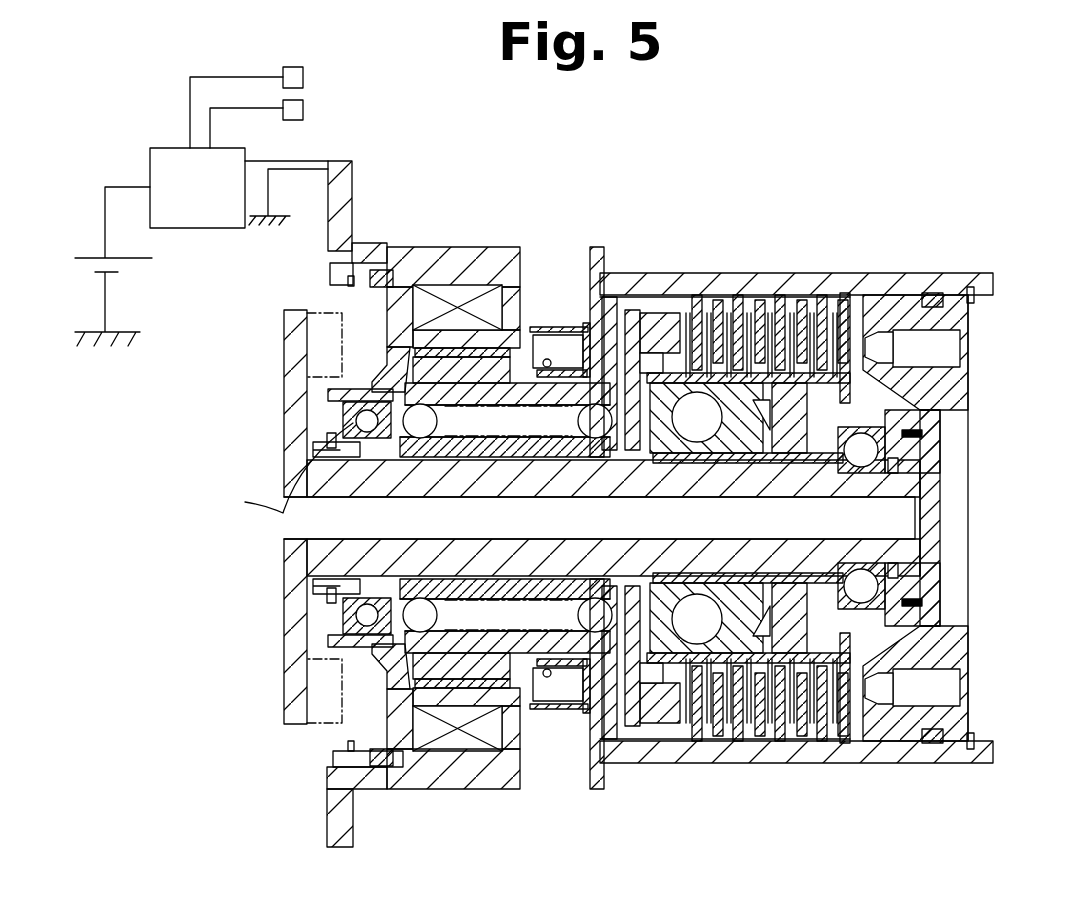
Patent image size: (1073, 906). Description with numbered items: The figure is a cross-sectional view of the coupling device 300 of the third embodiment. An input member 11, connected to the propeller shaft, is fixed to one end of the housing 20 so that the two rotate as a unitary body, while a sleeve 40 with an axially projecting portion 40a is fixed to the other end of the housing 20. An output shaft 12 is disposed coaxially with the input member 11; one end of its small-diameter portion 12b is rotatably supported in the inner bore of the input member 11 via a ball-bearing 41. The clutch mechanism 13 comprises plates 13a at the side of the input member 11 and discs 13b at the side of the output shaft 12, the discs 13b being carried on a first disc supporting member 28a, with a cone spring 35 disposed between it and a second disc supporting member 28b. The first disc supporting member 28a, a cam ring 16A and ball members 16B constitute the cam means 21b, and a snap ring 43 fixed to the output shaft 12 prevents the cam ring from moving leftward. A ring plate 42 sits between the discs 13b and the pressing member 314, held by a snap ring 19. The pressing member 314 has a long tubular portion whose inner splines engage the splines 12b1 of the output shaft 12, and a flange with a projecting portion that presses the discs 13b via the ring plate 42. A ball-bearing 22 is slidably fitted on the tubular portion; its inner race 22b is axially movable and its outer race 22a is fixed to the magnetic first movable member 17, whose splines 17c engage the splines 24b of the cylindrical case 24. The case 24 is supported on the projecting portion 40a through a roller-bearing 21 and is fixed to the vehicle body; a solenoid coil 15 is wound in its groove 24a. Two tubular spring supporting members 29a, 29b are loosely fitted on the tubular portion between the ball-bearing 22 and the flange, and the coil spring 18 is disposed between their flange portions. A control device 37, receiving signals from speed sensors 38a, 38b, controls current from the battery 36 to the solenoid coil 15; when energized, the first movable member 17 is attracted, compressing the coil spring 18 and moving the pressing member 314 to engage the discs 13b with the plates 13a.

The input member 11 is at (973, 381).
The output shaft 12 is at (297, 558).
The small-diameter portion 12b is at (737, 730).
The splines 12b1 is at (823, 733).
The clutch mechanism 13 is at (819, 268).
The plates 13a is at (700, 310).
The discs 13b is at (750, 317).
The solenoid coil 15 is at (462, 292).
The cam ring 16A is at (627, 343).
The ball members 16B is at (775, 445).
The first movable member 17 is at (395, 313).
The splines 17c is at (385, 273).
The coil spring 18 is at (515, 417).
The snap ring 19 is at (667, 343).
The housing 20 is at (873, 280).
The roller-bearing 21 is at (480, 368).
The cam means 21b is at (672, 395).
The ball-bearing 22 is at (338, 418).
The outer race 22a is at (340, 407).
The inner race 22b is at (353, 430).
The cylindrical case 24 is at (347, 202).
The circular groove 24a is at (493, 733).
The splines 24b is at (333, 757).
The first disc supporting member 28a is at (705, 428).
The second disc supporting member 28b is at (917, 507).
The spring supporting member 29a is at (266, 471).
The spring supporting member 29b is at (603, 277).
The cone spring 35 is at (772, 405).
The battery 36 is at (98, 248).
The control device 37 is at (167, 160).
The speed sensor 38a is at (305, 77).
The speed sensor 38b is at (305, 108).
The sleeve 40 is at (595, 737).
The projecting portion 40a is at (540, 705).
The ball-bearing 41 is at (897, 580).
The ring plate 42 is at (698, 330).
The snap ring 43 is at (645, 660).
The coupling device 300 is at (694, 156).
The pressing member 314 is at (650, 323).